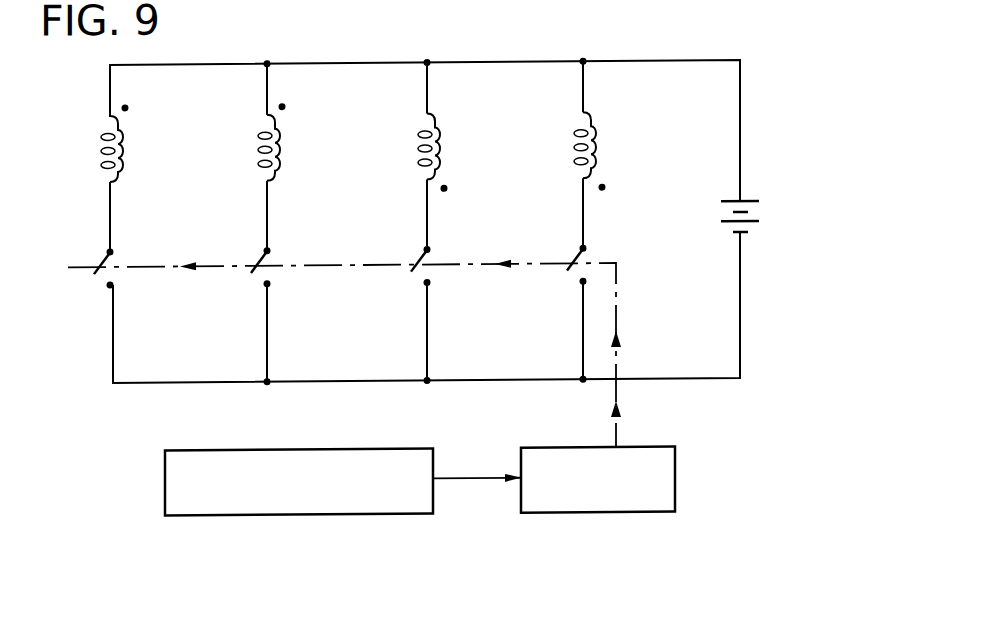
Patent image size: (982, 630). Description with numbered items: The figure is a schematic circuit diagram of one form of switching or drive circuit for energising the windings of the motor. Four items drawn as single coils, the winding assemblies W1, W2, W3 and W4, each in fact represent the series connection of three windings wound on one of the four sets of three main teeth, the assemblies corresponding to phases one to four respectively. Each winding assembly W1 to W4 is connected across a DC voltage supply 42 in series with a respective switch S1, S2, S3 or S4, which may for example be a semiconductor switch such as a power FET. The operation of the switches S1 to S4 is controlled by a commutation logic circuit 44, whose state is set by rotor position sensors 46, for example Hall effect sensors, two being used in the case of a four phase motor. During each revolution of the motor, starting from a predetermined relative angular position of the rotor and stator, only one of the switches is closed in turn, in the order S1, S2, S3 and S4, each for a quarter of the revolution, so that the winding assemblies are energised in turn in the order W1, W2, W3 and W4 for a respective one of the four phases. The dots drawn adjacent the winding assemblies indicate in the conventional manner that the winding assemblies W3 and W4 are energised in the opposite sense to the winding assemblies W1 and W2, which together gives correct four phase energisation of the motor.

The winding assembly W1 is at (103, 151).
The winding assembly W2 is at (260, 151).
The winding assembly W3 is at (419, 151).
The winding assembly W4 is at (575, 151).
The switch S1 is at (95, 251).
The switch S2 is at (252, 251).
The switch S3 is at (412, 251).
The switch S4 is at (568, 251).
The DC voltage supply 42 is at (720, 205).
The commutation logic circuit 44 is at (577, 451).
The rotor position sensors 46 is at (312, 451).